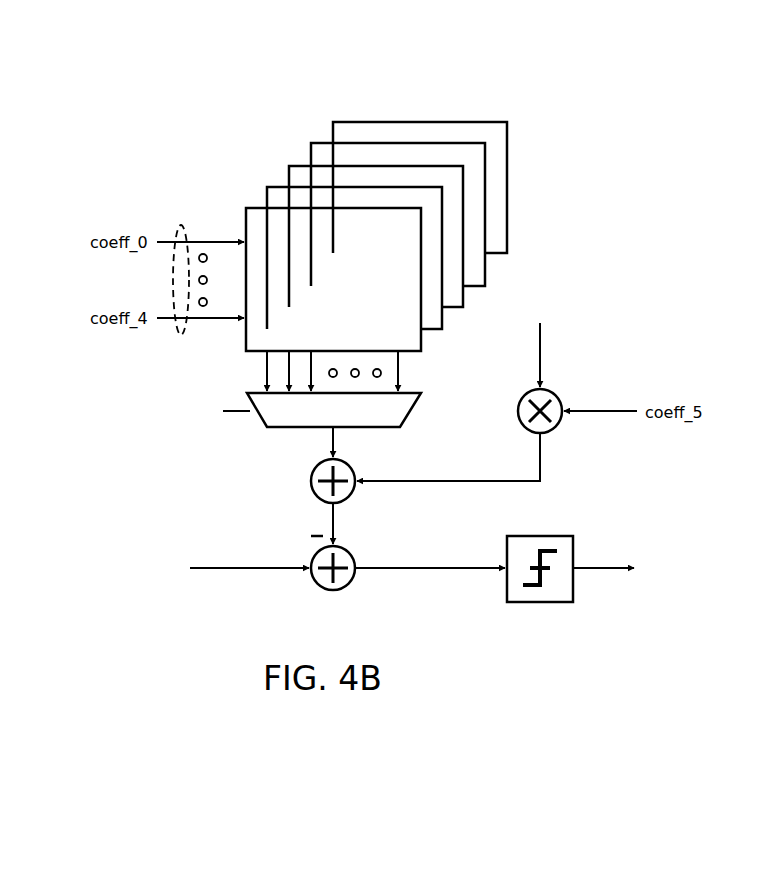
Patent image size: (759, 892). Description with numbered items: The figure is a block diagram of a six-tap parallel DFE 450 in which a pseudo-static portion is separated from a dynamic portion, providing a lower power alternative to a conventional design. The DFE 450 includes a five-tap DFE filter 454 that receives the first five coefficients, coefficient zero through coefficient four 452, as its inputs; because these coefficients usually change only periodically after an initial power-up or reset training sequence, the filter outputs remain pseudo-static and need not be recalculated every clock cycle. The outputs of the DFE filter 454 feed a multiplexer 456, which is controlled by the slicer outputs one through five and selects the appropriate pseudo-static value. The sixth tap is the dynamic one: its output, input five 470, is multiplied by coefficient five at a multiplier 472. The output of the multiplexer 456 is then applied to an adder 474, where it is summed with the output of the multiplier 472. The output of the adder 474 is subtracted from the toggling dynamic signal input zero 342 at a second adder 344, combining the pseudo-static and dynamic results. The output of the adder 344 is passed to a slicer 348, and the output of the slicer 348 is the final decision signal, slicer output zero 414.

The DFE 450 is at (270, 112).
The coefficient_0 through coefficient_4 452 is at (181, 225).
The 5-tap DFE filter 454 is at (352, 325).
The multiplexer 456 is at (262, 421).
The input_5 470 is at (541, 357).
The multiplier 472 is at (548, 430).
The adder 474 is at (312, 488).
The input_0 342 is at (250, 572).
The adder 344 is at (320, 591).
The slicer 348 is at (540, 602).
The slicer_out_0 414 is at (604, 570).